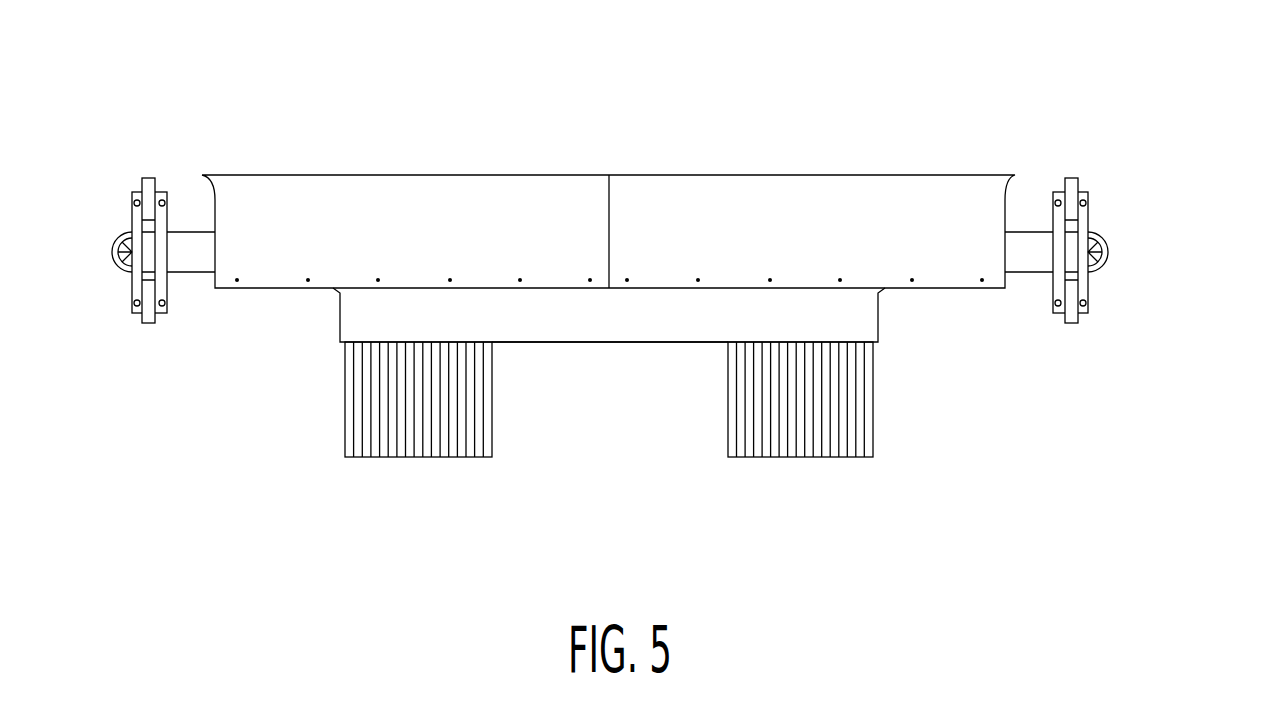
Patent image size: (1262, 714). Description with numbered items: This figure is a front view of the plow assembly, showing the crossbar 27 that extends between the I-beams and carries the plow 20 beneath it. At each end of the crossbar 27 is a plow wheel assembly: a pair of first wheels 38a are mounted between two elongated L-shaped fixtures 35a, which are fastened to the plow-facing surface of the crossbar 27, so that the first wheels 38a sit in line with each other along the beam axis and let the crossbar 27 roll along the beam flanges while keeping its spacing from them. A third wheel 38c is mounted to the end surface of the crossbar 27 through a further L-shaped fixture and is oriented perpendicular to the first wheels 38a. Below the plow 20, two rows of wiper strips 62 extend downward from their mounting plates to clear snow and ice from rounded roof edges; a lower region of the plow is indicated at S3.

The plow 20 is at (392, 215).
The crossbar 27 is at (1029, 229).
The L-shaped fixture 35a is at (1091, 297).
The first wheel 38a is at (1081, 177).
The third wheel 38c is at (1113, 240).
The wiper strip 62 is at (338, 484).
The lower surface S3 is at (620, 345).